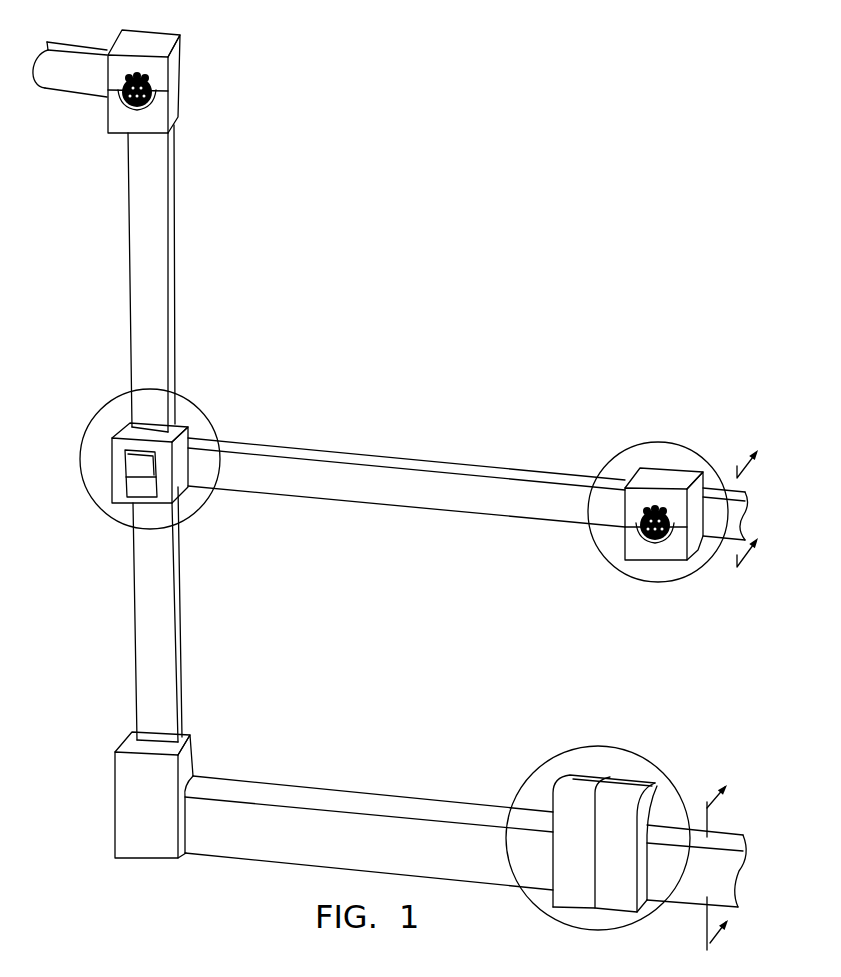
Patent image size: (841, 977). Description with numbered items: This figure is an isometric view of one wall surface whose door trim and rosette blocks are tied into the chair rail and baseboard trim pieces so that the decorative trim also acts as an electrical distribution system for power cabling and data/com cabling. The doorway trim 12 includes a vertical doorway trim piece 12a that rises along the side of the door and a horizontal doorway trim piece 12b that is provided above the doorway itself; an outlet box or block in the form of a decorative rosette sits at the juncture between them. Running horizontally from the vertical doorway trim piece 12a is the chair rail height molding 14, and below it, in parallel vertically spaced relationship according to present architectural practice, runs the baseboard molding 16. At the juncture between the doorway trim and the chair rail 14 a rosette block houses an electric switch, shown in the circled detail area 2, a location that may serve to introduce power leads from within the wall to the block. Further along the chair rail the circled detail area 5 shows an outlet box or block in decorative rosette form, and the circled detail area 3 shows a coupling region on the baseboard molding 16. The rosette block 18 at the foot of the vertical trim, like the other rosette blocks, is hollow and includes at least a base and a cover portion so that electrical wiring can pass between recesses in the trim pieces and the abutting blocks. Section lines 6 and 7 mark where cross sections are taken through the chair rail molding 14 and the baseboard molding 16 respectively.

The doorway trim 12 is at (207, 145).
The vertical doorway trim piece 12a is at (161, 257).
The horizontal doorway trim piece 12b is at (68, 70).
The chair rail height molding 14 is at (145, 43).
The rosette block at juncture of doorway trim and chair rail 2 is at (192, 402).
The coupling on baseboard molding 3 is at (543, 763).
The outlet box on chair rail 5 is at (620, 453).
The section line 6- 6 is at (744, 512).
The section line 7- 7 is at (716, 869).
The baseboard molding 16 is at (392, 805).
The rosette block 18 is at (208, 753).